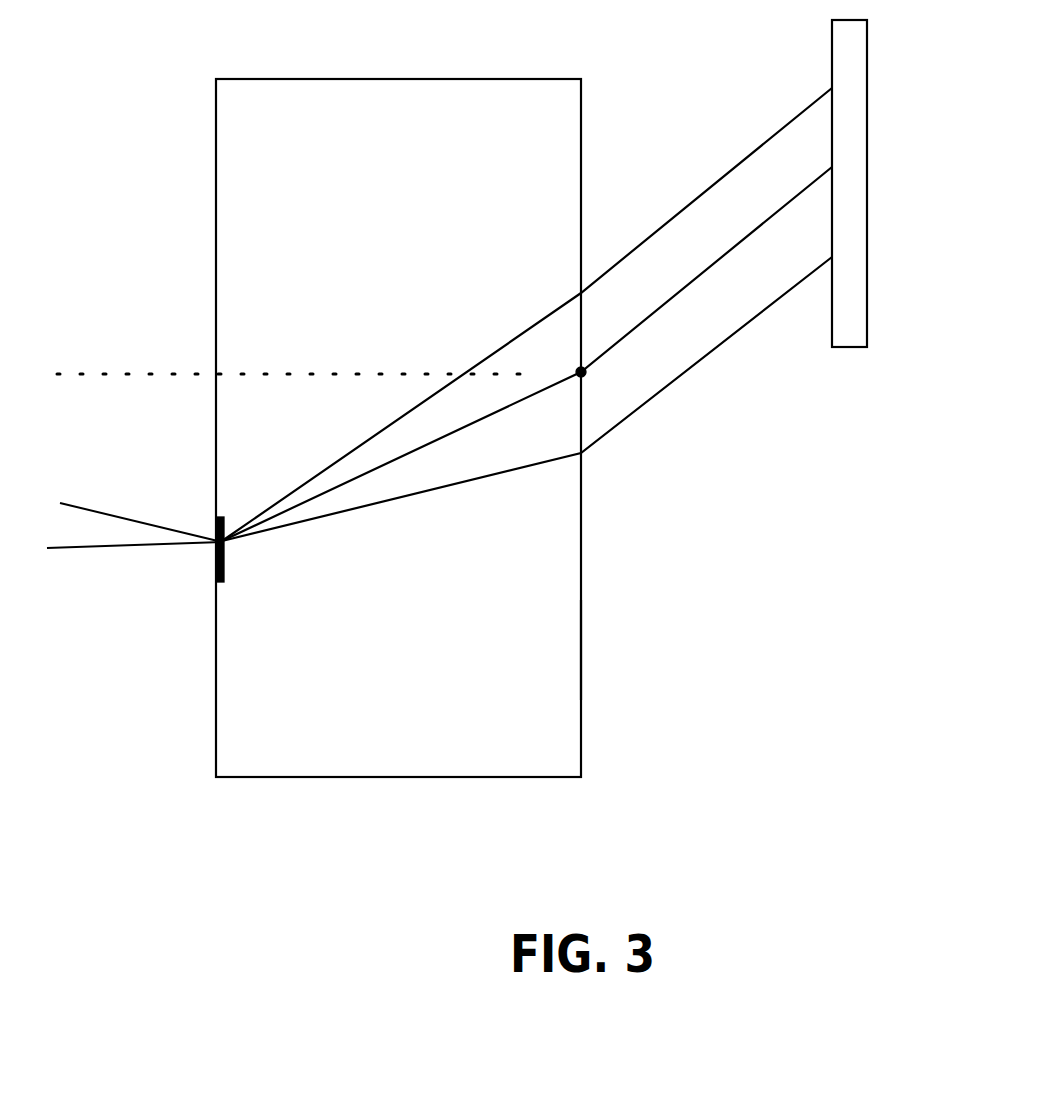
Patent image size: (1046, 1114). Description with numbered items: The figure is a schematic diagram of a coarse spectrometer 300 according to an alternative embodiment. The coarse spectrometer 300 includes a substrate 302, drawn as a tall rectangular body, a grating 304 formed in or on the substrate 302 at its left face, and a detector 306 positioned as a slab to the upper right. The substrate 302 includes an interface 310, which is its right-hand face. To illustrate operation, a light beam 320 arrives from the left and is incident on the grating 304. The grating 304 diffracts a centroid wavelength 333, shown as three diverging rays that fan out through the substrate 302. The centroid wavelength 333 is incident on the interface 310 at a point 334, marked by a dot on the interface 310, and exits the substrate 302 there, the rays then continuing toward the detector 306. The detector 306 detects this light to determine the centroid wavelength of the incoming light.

The coarse spectrometer 300 is at (791, 791).
The substrate 302 is at (419, 752).
The grating 304 is at (226, 578).
The detector 306 is at (868, 343).
The interface 310 is at (580, 648).
The light beam 320 is at (95, 550).
The centroid wavelength 333 is at (443, 438).
The point 334 is at (585, 376).